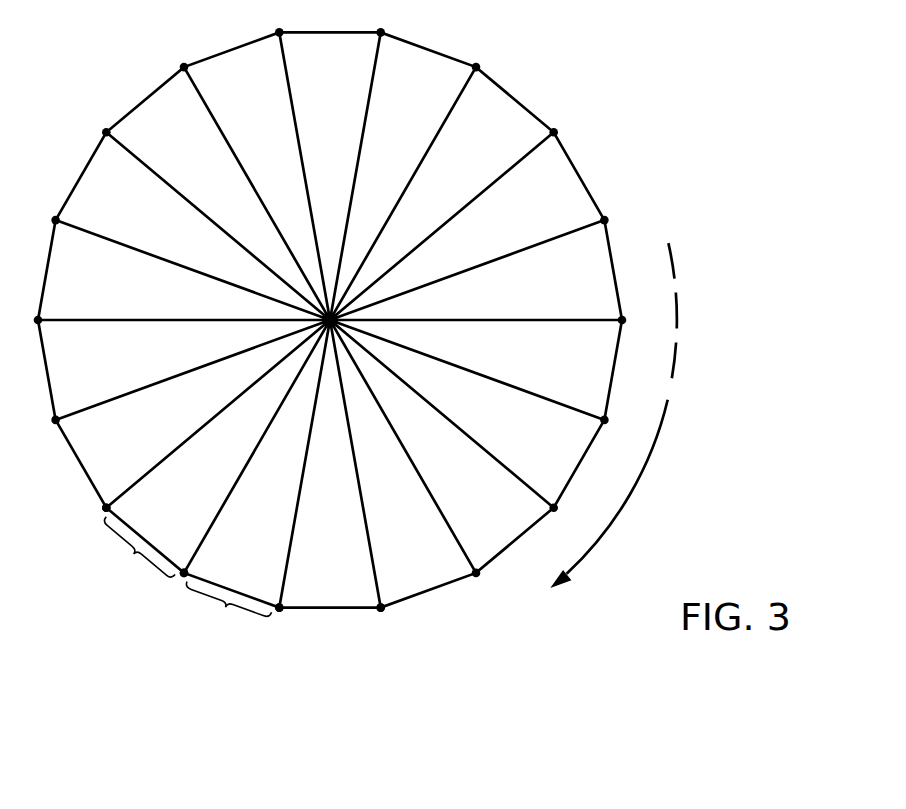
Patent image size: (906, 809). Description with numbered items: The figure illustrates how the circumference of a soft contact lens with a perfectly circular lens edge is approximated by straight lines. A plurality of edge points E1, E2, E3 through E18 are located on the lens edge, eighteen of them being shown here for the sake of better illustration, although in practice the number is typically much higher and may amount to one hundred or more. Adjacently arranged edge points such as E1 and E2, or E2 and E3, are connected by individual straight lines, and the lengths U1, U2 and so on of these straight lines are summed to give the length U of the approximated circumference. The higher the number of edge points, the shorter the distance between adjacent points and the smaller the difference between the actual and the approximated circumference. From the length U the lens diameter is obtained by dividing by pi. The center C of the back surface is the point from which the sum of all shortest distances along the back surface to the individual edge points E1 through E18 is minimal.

The center of the back surface C is at (330, 320).
The length of the approximated circumference U is at (650, 460).
The edge point E1 is at (279, 608).
The edge point E2 is at (184, 573).
The edge point E3 is at (106, 508).
The edge point E18 is at (381, 608).
The length of straight line U1 is at (227, 614).
The length of straight line U2 is at (137, 554).